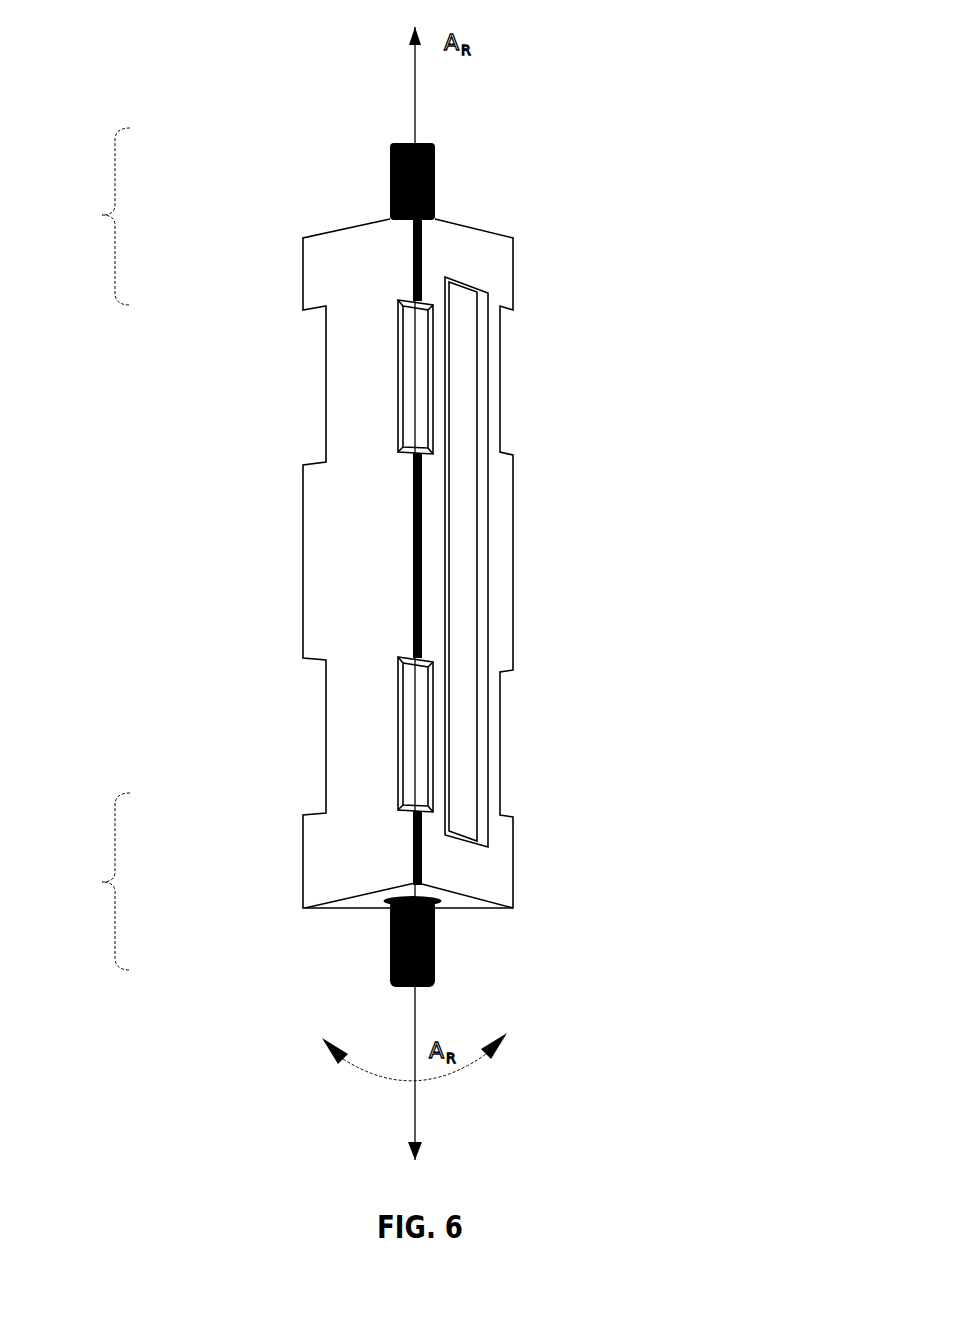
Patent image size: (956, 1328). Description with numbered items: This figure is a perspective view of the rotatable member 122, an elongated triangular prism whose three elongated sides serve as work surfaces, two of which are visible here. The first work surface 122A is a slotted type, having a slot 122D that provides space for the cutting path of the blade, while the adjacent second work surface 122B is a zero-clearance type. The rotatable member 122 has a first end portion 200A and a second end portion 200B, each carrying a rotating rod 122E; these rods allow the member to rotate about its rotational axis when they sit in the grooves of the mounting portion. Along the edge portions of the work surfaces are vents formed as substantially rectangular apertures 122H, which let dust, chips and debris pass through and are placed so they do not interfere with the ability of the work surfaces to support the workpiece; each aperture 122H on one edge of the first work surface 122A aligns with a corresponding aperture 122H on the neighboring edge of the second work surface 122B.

The rotatable member 122 is at (525, 163).
The first work surface 122A is at (470, 251).
The second work surface 122B is at (336, 265).
The slot 122D is at (468, 528).
The rotating rods 122E is at (390, 173).
The aperture 122H is at (562, 712).
The first end portion 200A is at (86, 216).
The second end portion 200B is at (87, 881).